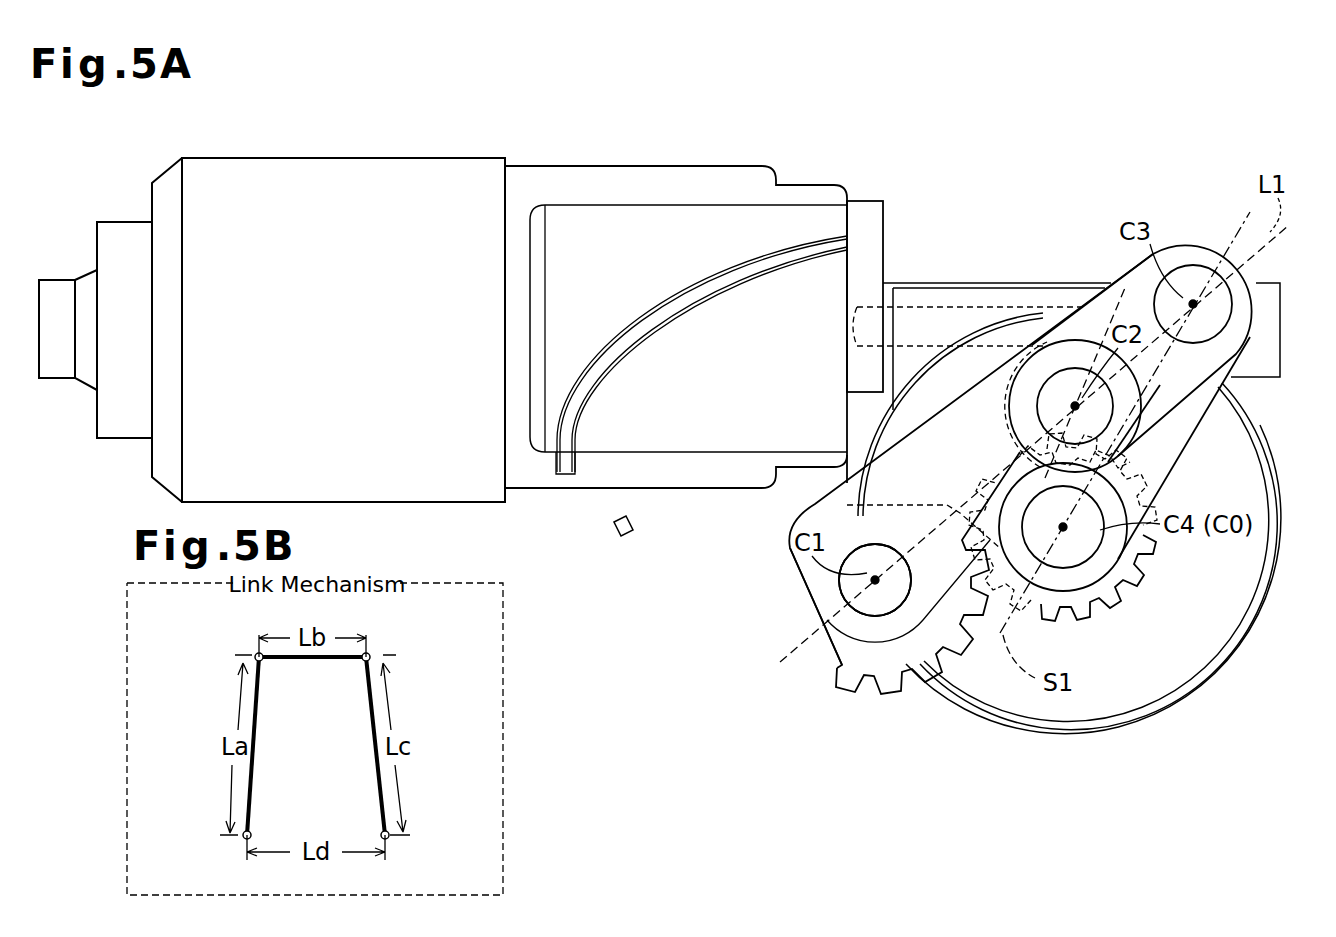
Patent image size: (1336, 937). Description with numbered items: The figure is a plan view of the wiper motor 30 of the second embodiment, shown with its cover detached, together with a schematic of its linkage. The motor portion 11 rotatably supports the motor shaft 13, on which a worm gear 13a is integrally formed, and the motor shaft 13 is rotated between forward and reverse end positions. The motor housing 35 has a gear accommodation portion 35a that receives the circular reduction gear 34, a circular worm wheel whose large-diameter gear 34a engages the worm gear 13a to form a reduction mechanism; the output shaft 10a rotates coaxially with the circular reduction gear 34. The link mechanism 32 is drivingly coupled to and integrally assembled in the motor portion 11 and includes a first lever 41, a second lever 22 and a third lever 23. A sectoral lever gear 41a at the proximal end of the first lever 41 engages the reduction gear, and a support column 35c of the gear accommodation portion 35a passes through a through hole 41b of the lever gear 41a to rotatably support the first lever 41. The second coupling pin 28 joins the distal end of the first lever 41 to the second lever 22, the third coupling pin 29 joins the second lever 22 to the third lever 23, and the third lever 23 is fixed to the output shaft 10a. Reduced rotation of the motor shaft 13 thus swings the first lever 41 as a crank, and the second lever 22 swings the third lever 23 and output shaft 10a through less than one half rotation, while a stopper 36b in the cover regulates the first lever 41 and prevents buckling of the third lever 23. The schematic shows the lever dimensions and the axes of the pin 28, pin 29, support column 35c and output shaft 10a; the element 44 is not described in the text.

In FIG. 5A, the motor portion 11 is at (458, 158).
In FIG. 5A, the wiper motor 30 is at (966, 112).
In FIG. 5A, the link mechanism 32 is at (855, 429).
In FIG. 5A, the motor housing 35 is at (876, 205).
In FIG. 5B, the motor housing 35 is at (245, 838).
In FIG. 5A, the motor shaft 13 is at (912, 307).
In FIG. 5A, the worm gear 13a is at (1040, 305).
In FIG. 5A, the first lever 41 is at (948, 420).
In FIG. 5B, the first lever 41 is at (257, 733).
In FIG. 5A, the lever gear 41a is at (832, 658).
In FIG. 5A, the through hole 41b is at (840, 583).
In FIG. 5A, the support column 35c is at (865, 560).
In FIG. 5A, the second lever 22 is at (1105, 298).
In FIG. 5B, the second lever 22 is at (312, 660).
In FIG. 5A, the second coupling pin 28 is at (1192, 272).
In FIG. 5B, the second coupling pin 28 is at (256, 655).
In FIG. 5B, the third coupling pin 29 is at (370, 655).
In FIG. 5A, the intermediate gear 44 is at (1012, 405).
In FIG. 5A, the third lever 23 is at (1180, 457).
In FIG. 5B, the third lever 23 is at (368, 732).
In FIG. 5A, the output shaft 10a is at (1083, 542).
In FIG. 5B, the output shaft 10a is at (388, 838).
In FIG. 5A, the circular reduction gear 34 is at (1255, 493).
In FIG. 5A, the large-diameter gear 34a is at (1092, 617).
In FIG. 5A, the gear accommodation portion 35a is at (1230, 660).
In FIG. 5A, the stopper 36b is at (612, 530).